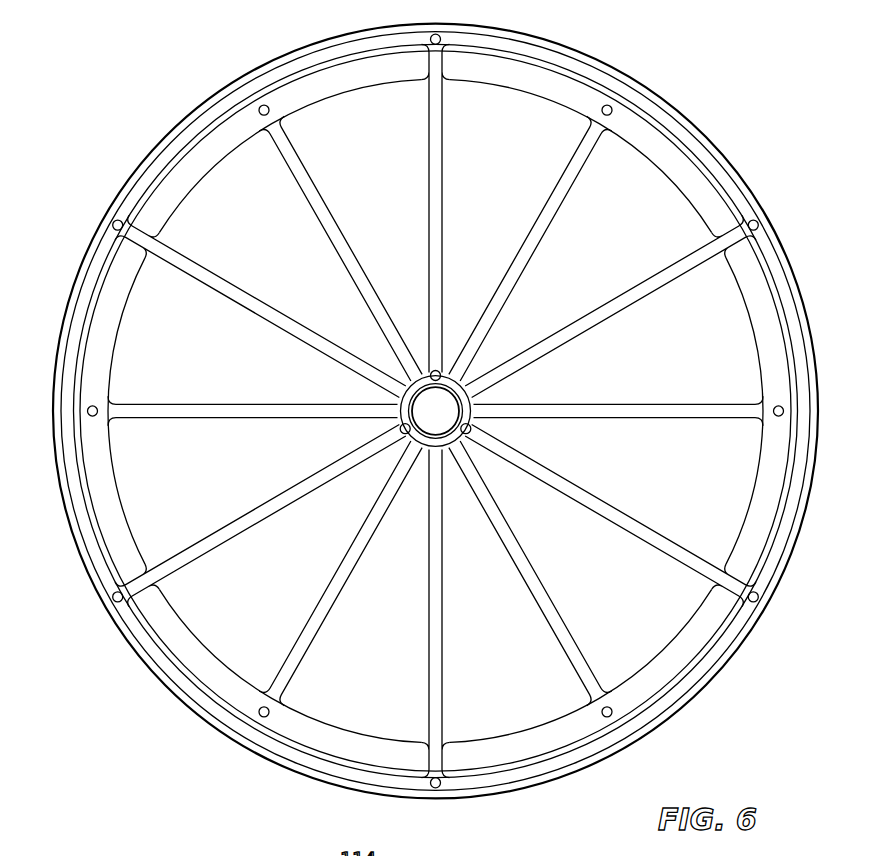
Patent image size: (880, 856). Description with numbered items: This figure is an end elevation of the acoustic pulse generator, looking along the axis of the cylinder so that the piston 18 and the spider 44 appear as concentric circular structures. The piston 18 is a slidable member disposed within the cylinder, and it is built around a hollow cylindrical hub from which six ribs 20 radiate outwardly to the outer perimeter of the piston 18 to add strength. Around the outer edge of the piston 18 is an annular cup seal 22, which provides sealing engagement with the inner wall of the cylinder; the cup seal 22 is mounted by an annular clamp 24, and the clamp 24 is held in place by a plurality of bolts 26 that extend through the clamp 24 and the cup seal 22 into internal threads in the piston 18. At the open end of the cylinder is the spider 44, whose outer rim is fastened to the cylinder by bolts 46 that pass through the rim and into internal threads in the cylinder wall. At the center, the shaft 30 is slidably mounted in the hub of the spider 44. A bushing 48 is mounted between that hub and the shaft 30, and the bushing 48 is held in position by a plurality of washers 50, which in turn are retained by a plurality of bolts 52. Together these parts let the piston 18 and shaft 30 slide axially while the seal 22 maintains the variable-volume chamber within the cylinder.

The piston 18 is at (283, 271).
The ribs 20 is at (343, 229).
The annular cup seal 22 is at (88, 493).
The annular clamp 24 is at (127, 520).
The bolts 26 is at (610, 105).
The shaft 30 is at (448, 419).
The spider 44 is at (180, 673).
The bolts 46 is at (443, 37).
The bushing 48 is at (474, 398).
The washers 50 is at (400, 442).
The bolts 52 is at (397, 395).